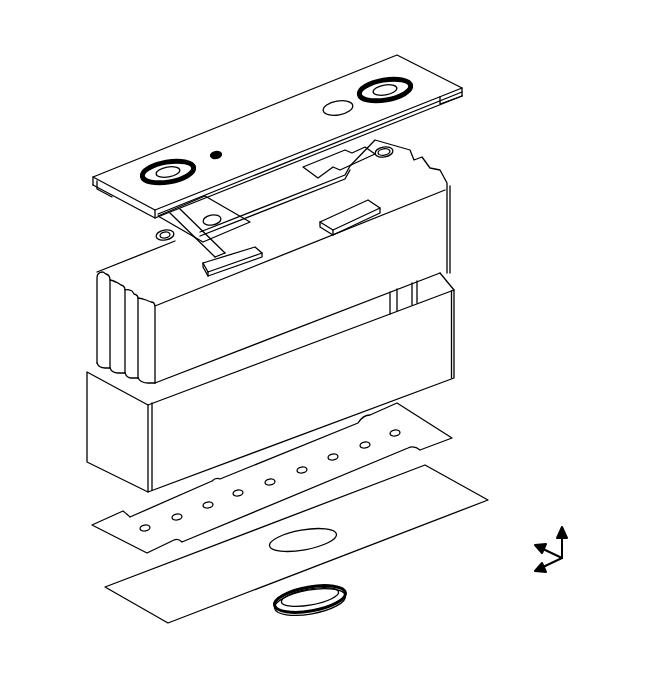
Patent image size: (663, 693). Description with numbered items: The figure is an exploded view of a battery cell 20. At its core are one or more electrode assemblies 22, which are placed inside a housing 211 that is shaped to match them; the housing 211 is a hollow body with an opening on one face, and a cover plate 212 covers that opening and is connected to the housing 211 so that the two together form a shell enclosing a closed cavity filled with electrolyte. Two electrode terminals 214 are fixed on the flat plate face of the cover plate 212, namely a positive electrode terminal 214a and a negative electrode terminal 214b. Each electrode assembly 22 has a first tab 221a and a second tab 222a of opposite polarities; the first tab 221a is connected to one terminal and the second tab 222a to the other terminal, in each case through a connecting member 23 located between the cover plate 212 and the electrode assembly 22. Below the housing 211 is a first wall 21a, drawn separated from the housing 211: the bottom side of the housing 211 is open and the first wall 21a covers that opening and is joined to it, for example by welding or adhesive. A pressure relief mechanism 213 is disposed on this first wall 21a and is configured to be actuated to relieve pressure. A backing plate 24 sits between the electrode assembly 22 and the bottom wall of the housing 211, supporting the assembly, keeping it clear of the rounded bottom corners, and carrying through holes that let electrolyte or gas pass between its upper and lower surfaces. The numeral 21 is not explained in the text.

The battery cell 20 is at (74, 37).
The battery cell 21 is at (265, 332).
The first wall 21a is at (457, 483).
The housing 211 is at (420, 348).
The cover plate 212 is at (432, 95).
The pressure relief mechanism 213 is at (322, 588).
The electrode terminals 214 is at (328, 30).
The positive electrode terminal 214a is at (163, 166).
The negative electrode terminal 214b is at (394, 78).
The electrode assembly 22 is at (300, 238).
The first tab 221a is at (198, 264).
The second tab 222a is at (353, 223).
The connecting member 23 is at (398, 148).
The backing plate 24 is at (423, 427).